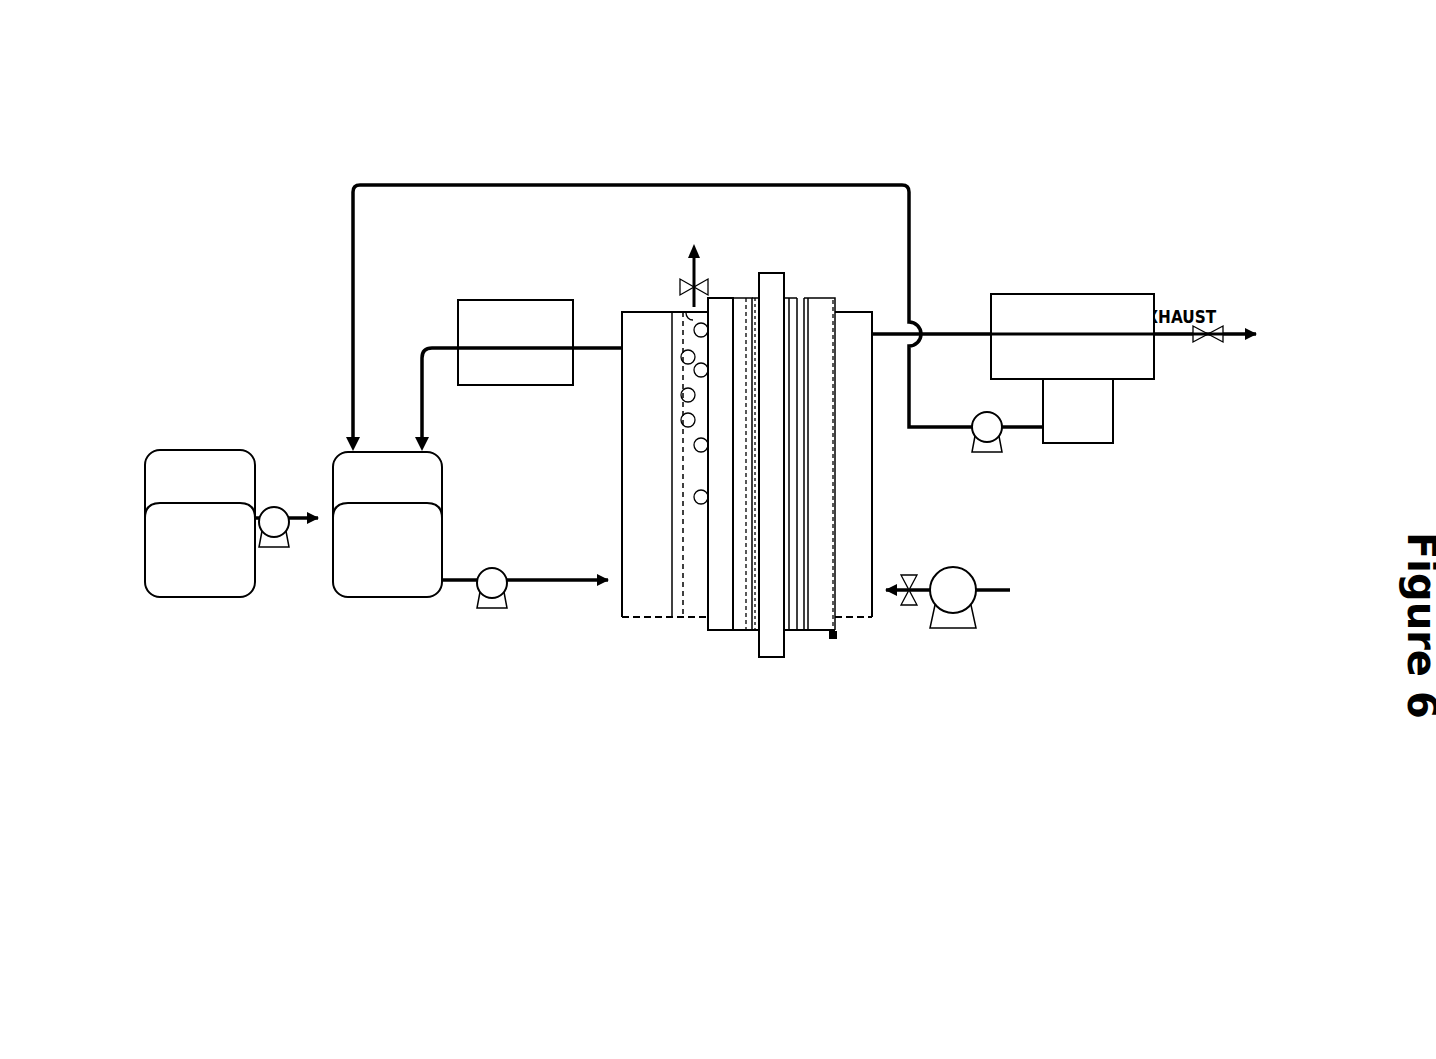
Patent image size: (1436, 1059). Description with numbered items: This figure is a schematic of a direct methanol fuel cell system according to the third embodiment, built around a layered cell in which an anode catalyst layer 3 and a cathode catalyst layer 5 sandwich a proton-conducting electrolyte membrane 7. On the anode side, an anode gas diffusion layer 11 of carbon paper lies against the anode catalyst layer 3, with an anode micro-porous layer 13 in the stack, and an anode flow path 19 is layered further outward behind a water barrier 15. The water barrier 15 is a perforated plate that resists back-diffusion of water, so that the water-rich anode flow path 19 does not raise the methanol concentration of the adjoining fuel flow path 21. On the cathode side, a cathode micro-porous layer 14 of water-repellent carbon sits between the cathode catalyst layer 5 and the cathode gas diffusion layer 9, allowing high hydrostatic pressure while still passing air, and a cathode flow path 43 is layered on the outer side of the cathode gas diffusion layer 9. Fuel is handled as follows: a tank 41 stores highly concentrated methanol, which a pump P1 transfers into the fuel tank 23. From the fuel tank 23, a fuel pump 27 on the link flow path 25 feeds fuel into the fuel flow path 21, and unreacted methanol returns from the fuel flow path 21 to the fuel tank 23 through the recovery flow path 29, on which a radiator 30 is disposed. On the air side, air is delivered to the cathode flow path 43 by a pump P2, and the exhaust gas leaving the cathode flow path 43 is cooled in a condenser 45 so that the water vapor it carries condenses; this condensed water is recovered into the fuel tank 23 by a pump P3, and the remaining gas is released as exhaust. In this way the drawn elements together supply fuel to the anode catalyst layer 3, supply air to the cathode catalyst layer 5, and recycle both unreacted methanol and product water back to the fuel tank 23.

The anode catalyst layer 3 is at (752, 305).
The cathode catalyst layer 5 is at (790, 305).
The electrolyte membrane 7 is at (775, 285).
The cathode gas diffusion layer 9 is at (815, 610).
The anode gas diffusion layer 11 is at (723, 615).
The anode micro-porous layer 13 is at (740, 615).
The cathode micro-porous layer 14 is at (800, 305).
The water barrier 15 is at (676, 600).
The anode flow path 19 is at (683, 306).
The fuel flow path 21 is at (633, 472).
The fuel tank 23 is at (365, 585).
The link flow path 25 is at (545, 585).
The fuel pump 27 is at (495, 572).
The recovery flow path 29 is at (432, 346).
The radiator 30 is at (535, 298).
The tank 41 is at (170, 585).
The cathode flow path 43 is at (860, 497).
The condenser 45 is at (1112, 292).
The pump P1 is at (275, 548).
The gas supply pump P2 is at (957, 630).
The pump P3 is at (995, 452).